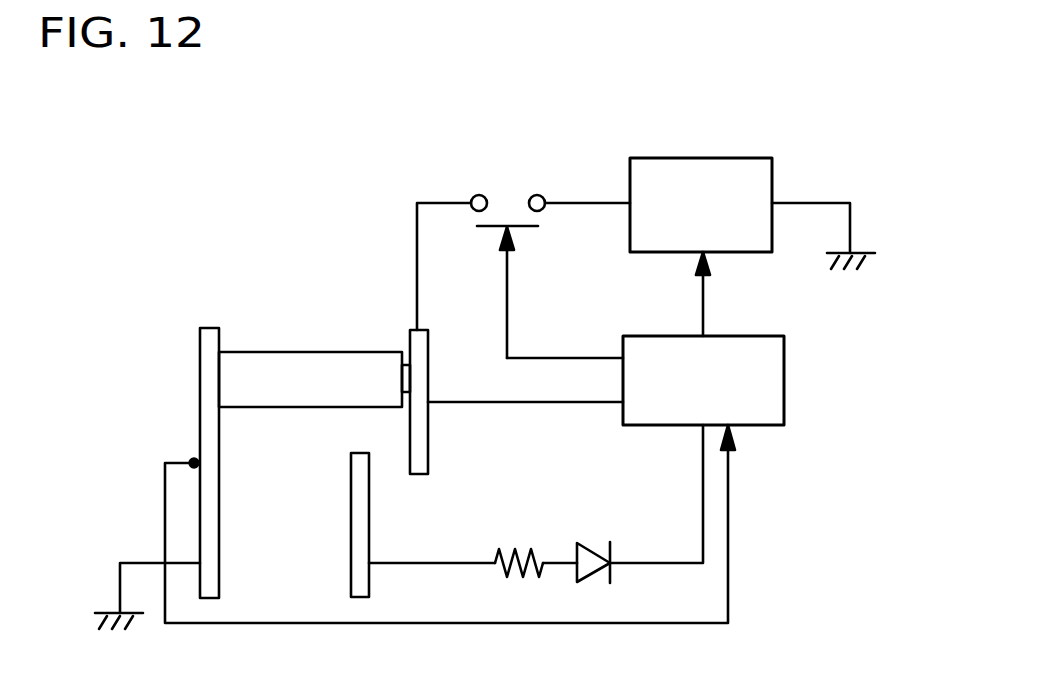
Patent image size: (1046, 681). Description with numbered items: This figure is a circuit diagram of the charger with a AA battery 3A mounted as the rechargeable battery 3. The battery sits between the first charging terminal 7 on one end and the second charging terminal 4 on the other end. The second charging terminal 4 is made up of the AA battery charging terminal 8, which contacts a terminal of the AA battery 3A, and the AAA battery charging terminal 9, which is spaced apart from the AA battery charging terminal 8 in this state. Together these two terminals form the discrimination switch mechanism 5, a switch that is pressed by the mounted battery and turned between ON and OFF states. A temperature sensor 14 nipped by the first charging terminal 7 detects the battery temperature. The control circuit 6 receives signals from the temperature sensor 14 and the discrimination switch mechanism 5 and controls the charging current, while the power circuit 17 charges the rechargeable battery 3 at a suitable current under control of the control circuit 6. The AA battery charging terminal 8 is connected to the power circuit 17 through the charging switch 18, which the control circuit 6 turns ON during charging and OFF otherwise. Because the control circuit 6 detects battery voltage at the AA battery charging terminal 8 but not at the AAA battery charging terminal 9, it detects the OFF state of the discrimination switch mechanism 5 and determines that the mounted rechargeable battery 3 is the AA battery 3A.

The rechargeable battery 3 is at (314, 343).
The AA battery 3A is at (295, 380).
The second charging terminal 4 is at (444, 463).
The discrimination switch mechanism 5 is at (319, 463).
The control circuit 6 is at (780, 363).
The first charging terminal 7 is at (210, 377).
The AA battery charging terminal 8 is at (419, 452).
The AAA battery charging terminal 9 is at (359, 550).
The temperature sensor 14 is at (194, 463).
The power circuit 17 is at (737, 170).
The charging switch 18 is at (508, 200).